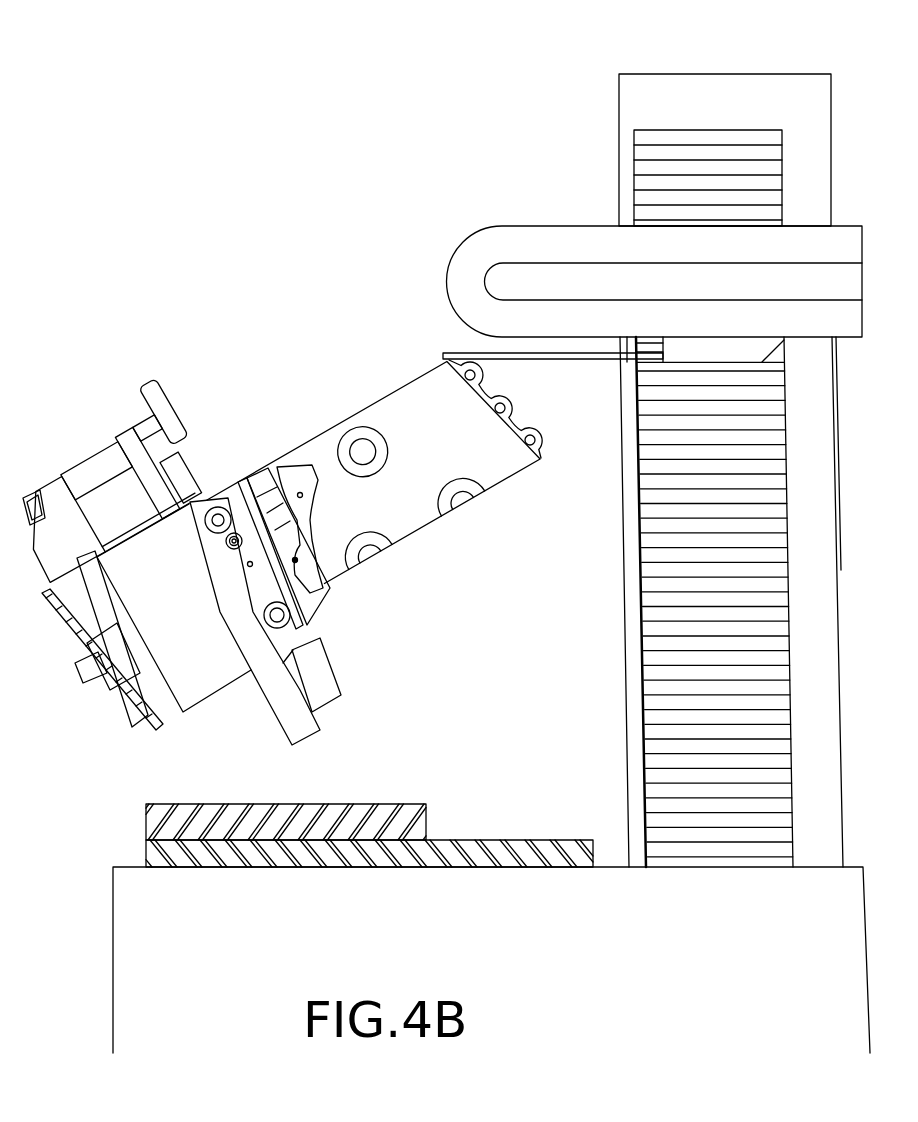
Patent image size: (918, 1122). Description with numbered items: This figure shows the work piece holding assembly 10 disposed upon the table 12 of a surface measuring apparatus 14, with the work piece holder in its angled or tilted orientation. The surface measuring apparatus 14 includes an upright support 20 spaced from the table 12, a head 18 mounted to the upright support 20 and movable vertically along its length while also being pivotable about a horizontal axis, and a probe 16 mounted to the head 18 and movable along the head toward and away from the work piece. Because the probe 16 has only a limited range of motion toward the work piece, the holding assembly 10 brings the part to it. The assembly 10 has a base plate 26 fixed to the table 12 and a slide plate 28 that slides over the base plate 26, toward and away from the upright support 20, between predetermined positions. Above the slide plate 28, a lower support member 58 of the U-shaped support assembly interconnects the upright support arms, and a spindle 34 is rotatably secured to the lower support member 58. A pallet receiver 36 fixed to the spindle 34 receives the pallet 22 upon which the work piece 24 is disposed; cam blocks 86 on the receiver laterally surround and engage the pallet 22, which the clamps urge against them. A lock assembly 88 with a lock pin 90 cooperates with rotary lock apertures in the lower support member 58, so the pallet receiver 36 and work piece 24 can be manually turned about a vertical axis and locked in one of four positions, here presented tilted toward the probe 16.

The work piece holding assembly 10 is at (151, 322).
The table 12 is at (122, 929).
The surface measuring apparatus 14 is at (270, 148).
The probe 16 is at (565, 359).
The head 18 is at (497, 238).
The upright support 20 is at (628, 105).
The pallet 22 is at (305, 616).
The work piece 24 is at (432, 523).
The base plate 26 is at (542, 867).
The slide plate 28 is at (437, 822).
The spindle 34 is at (107, 388).
The pallet receiver 36 is at (212, 487).
The lower support member 58 is at (47, 592).
The cam blocks 86 is at (185, 528).
The lock assembly 88 is at (183, 412).
The lock pin 90 is at (92, 468).